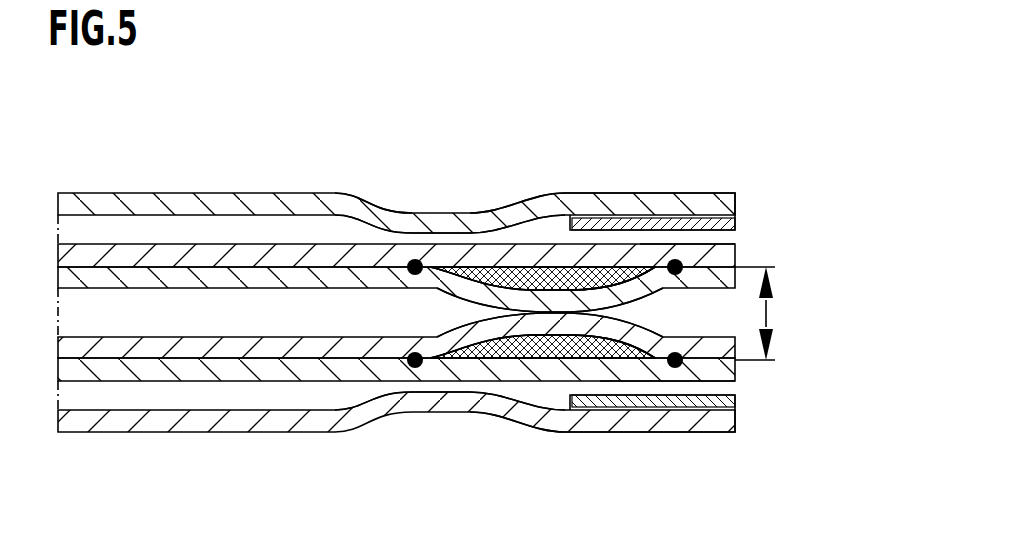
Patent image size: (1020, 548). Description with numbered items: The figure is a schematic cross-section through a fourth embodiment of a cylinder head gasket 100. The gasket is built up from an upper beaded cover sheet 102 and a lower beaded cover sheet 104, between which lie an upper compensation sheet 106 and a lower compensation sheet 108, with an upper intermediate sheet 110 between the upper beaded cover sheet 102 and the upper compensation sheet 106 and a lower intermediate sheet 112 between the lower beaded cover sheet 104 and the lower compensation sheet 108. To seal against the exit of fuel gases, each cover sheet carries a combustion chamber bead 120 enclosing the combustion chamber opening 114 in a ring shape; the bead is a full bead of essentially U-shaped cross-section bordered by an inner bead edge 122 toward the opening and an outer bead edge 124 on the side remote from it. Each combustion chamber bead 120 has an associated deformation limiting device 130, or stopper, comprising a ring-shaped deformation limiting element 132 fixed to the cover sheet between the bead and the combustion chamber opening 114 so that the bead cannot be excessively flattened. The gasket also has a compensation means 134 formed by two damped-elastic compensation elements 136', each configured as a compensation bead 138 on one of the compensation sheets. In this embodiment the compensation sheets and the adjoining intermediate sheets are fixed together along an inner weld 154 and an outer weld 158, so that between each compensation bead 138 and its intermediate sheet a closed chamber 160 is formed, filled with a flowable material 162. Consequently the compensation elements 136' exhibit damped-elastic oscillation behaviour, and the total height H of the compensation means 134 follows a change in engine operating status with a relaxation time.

The cylinder head gasket 100 is at (147, 160).
The upper beaded cover sheet 102 is at (78, 206).
The lower beaded cover sheet 104 is at (133, 420).
The upper compensation sheet 106 is at (148, 273).
The lower compensation sheet 108 is at (198, 350).
The upper intermediate sheet 110 is at (230, 250).
The lower intermediate sheet 112 is at (287, 370).
The combustion chamber opening 114 is at (817, 332).
The combustion chamber bead 120 is at (358, 180).
The inner bead edge 122 is at (548, 192).
The outer bead edge 124 is at (393, 230).
The deformation limiting device 130 is at (728, 174).
The deformation limiting element 132 is at (738, 219).
The compensation means 134 is at (672, 215).
The damped-elastic compensation element 136' is at (610, 263).
The compensation bead 138 is at (482, 245).
The inner weld 154 is at (678, 260).
The outer weld 158 is at (448, 303).
The chamber 160 is at (508, 265).
The flowable material 162 is at (588, 270).